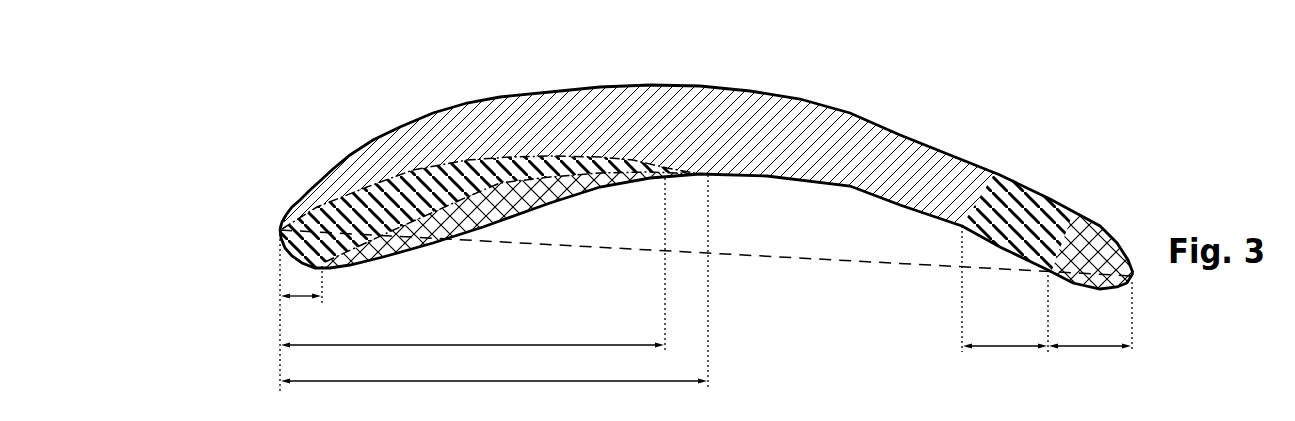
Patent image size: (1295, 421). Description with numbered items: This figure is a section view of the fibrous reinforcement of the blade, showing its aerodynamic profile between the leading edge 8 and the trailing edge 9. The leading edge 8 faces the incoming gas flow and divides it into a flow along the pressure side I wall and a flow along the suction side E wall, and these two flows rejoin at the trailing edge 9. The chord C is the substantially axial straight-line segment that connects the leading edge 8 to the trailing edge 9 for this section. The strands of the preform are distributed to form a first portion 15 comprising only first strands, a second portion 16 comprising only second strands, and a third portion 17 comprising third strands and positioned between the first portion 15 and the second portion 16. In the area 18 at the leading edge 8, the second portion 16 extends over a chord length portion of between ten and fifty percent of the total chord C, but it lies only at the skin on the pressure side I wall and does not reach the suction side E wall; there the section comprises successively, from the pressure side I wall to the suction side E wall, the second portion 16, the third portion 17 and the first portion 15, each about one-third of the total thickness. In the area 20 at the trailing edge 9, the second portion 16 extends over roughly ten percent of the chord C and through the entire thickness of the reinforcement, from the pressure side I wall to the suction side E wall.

The leading edge 8 is at (272, 230).
The trailing edge 9 is at (1145, 282).
The first portion 15 is at (511, 122).
The second portion 16 is at (387, 250).
The third portion 17 is at (338, 212).
The area 18 is at (434, 204).
The area 20 is at (1070, 247).
The suction side wall E is at (829, 100).
The pressure side wall I is at (821, 189).
The chord C is at (706, 281).